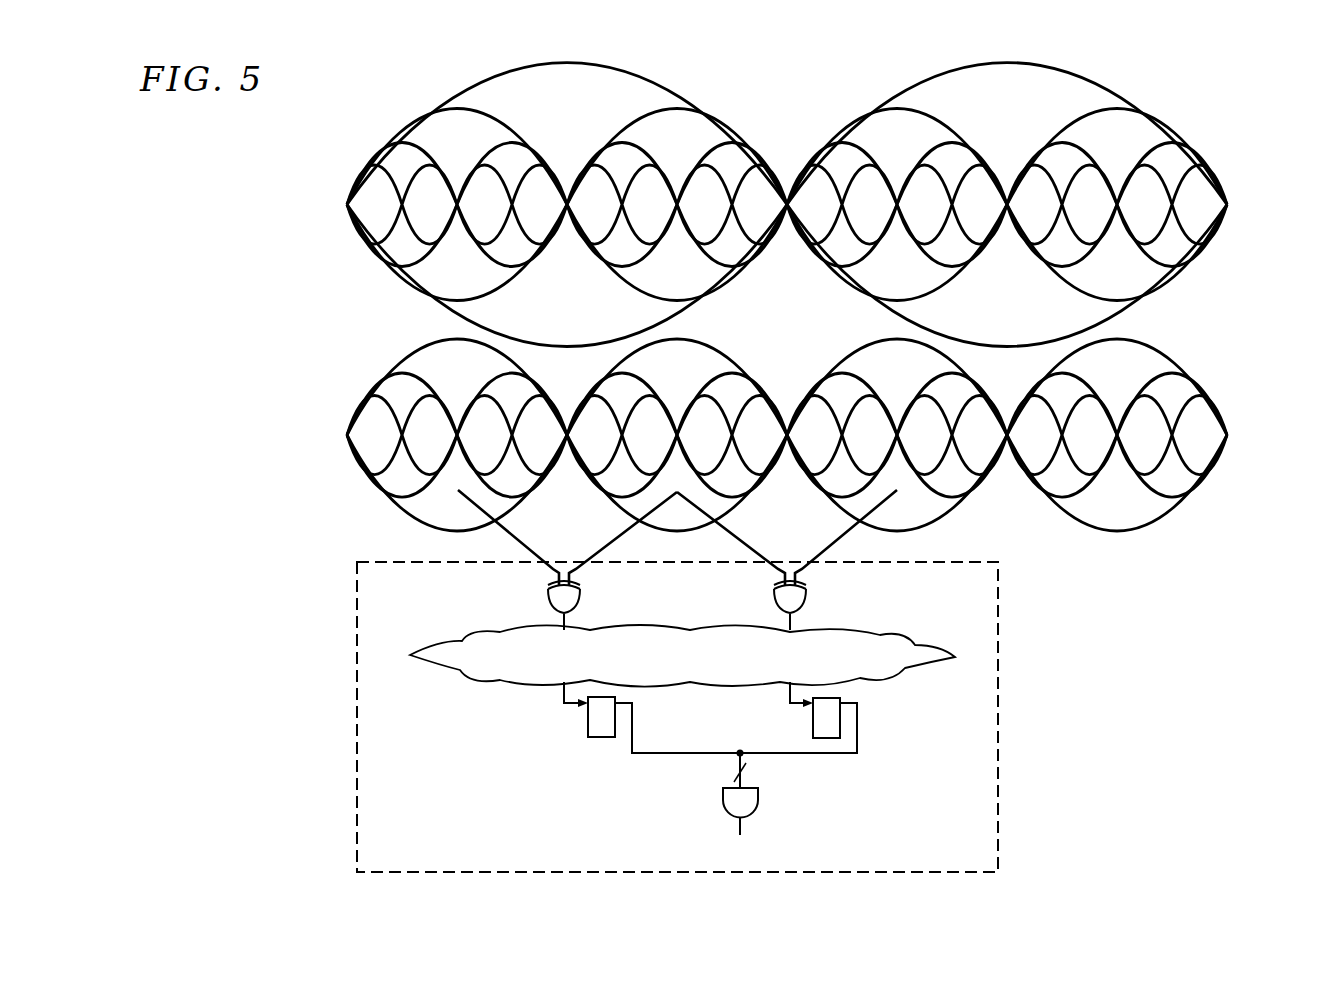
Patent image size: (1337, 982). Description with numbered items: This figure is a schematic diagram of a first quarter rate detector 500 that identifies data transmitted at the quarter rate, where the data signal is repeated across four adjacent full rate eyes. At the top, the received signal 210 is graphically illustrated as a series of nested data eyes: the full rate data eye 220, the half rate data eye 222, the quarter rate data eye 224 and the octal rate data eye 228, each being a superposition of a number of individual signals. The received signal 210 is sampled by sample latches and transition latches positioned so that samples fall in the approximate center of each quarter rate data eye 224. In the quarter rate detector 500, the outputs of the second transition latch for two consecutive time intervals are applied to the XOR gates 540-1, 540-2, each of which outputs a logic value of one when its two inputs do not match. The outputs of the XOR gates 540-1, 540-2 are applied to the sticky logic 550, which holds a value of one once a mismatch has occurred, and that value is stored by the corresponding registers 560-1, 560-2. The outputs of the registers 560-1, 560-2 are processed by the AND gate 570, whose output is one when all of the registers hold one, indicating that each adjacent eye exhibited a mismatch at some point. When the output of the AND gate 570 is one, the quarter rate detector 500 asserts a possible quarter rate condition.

The received signal 210 is at (1248, 115).
The full rate data eye 220 is at (340, 157).
The half rate data eye 222 is at (399, 179).
The quarter rate data eye 224 is at (457, 193).
The octal rate data eye 228 is at (567, 205).
The quarter rate detector 500 is at (1000, 622).
The XOR gate 540-1 is at (548, 594).
The XOR gate 540-2 is at (774, 594).
The sticky logic 550 is at (460, 662).
The register 560-1 is at (588, 725).
The register 560-2 is at (813, 723).
The AND gate 570 is at (758, 792).